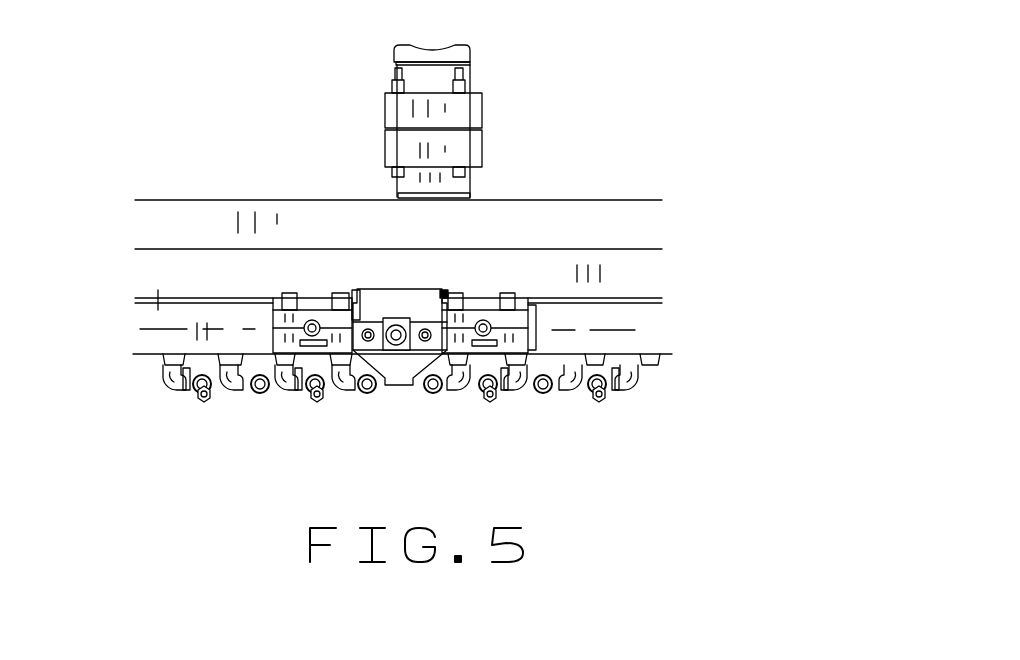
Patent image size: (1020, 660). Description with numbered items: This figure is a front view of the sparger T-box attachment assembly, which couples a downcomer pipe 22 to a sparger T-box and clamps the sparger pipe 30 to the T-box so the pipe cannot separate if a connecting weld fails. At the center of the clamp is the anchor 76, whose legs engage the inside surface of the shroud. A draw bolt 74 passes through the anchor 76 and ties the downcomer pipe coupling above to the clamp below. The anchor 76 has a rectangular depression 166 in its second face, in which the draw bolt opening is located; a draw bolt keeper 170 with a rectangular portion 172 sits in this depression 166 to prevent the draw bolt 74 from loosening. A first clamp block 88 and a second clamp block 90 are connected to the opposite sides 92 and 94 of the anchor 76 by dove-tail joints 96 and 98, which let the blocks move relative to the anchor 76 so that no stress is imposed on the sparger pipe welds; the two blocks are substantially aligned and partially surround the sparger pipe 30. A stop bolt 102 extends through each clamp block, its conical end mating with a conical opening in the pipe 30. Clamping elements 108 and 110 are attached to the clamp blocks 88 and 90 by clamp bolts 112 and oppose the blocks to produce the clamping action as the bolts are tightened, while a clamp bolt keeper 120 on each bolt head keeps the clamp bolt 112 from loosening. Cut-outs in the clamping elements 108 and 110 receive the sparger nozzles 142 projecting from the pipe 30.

The downcomer pipe 22 is at (455, 183).
The sparger pipe 30 is at (158, 310).
The draw bolt 74 is at (393, 352).
The anchor 76 is at (432, 290).
The first clamp block 88 is at (315, 300).
The second clamp block 90 is at (527, 302).
The side of anchor 92 is at (367, 297).
The side of anchor 94 is at (442, 290).
The dove-tail joint 96 is at (353, 300).
The dove-tail joint 98 is at (462, 290).
The stop bolt 102 is at (530, 317).
The clamping element 108 is at (273, 340).
The clamping element 110 is at (533, 340).
The clamp bolt 112 is at (290, 290).
The clamp bolt keeper 120 is at (332, 350).
The sparger nozzle 142 is at (288, 392).
The rectangular depression 166 is at (410, 318).
The draw bolt keeper 170 is at (390, 318).
The rectangular portion 172 is at (410, 352).